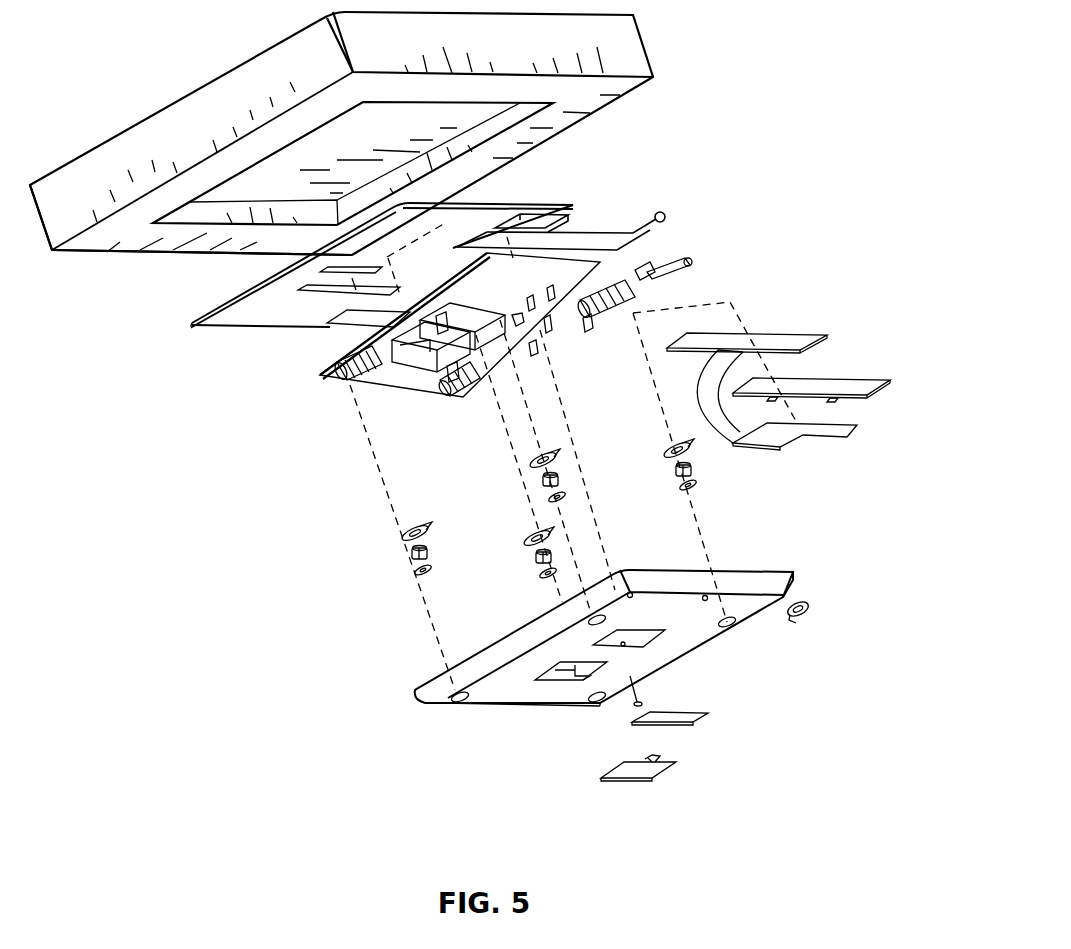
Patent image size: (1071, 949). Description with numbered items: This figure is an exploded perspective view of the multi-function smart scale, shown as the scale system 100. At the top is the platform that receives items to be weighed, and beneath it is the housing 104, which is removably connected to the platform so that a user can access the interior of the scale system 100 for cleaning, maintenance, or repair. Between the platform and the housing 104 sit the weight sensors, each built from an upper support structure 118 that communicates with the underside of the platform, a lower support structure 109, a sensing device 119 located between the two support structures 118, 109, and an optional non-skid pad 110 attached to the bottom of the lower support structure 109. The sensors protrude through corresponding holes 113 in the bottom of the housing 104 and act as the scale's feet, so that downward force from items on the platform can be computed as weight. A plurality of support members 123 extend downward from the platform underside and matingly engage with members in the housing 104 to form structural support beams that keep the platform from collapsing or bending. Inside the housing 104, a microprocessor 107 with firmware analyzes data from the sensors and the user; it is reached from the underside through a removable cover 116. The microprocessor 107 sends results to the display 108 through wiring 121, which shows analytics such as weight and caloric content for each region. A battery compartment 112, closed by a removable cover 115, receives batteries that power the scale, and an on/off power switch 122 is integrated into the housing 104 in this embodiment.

The scale system 100 is at (868, 131).
The housing 104 is at (425, 692).
The microprocessor 107 is at (847, 380).
The display 108 is at (807, 342).
The lower support structure 109 is at (410, 553).
The non-skid pad 110 is at (415, 570).
The battery compartment 112 is at (457, 385).
The holes 113 is at (462, 707).
The removable cover 115 is at (630, 772).
The removable cover 116 is at (697, 722).
The upper support structure 118 is at (340, 365).
The sensing device 119 is at (397, 538).
The wiring 121 is at (740, 437).
The on/off power switch 122 is at (812, 607).
The support members 123 is at (383, 373).